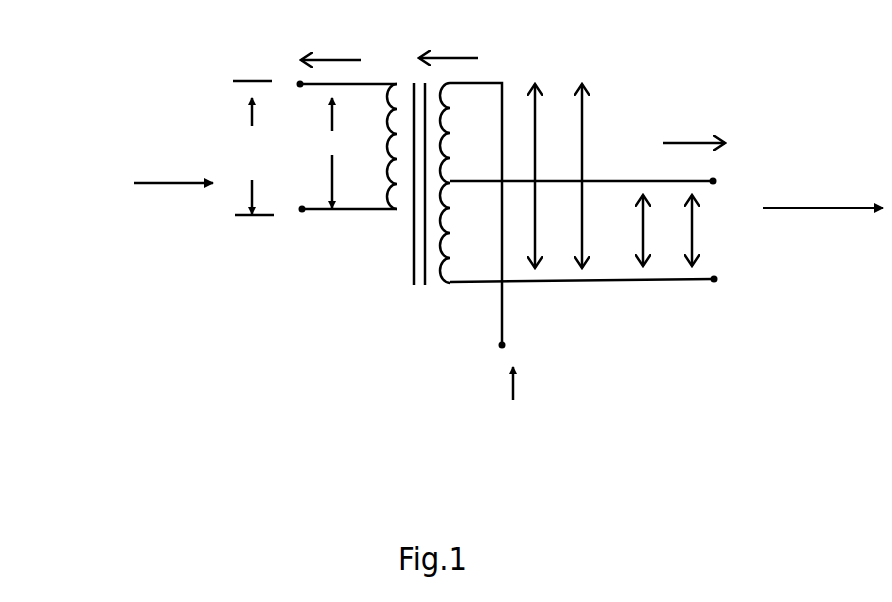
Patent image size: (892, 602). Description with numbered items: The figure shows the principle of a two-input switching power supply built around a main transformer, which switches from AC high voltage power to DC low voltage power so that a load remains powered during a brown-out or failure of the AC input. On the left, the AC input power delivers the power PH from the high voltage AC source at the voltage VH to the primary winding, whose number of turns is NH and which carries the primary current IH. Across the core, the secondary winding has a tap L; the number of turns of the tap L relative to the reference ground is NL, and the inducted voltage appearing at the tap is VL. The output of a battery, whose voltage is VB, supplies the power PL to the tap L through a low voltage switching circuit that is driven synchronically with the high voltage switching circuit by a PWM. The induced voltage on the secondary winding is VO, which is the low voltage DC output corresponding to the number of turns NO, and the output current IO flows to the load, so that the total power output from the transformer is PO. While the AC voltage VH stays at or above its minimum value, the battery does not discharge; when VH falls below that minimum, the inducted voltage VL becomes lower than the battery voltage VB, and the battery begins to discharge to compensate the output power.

The power from the high voltage AC input power source PH is at (114, 188).
The voltage of the AC input power VH is at (253, 148).
The number of turns of the primary winding NH is at (347, 147).
The primary current IH is at (389, 42).
The tap L is at (579, 195).
The number of turns of tap L relative to the reference ground NL is at (552, 176).
The inducted voltage of the tap L VL is at (600, 176).
The output current IO is at (694, 127).
The number of turns NO is at (660, 230).
The induced voltage generated on the secondary winding VO is at (709, 230).
The total power output from the transformer PO is at (823, 190).
The battery voltage VB is at (525, 341).
The power from the low voltage DC power source PL is at (500, 402).